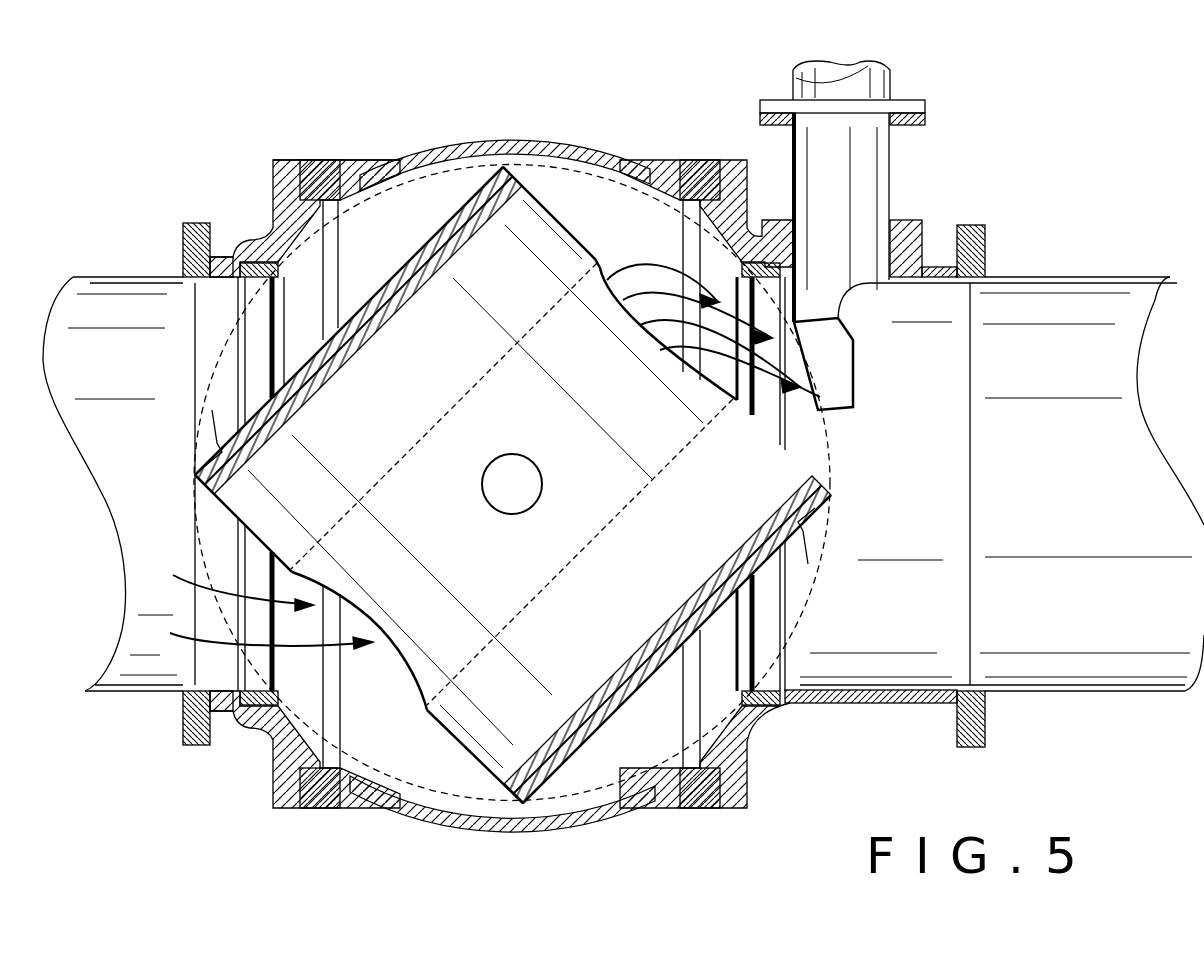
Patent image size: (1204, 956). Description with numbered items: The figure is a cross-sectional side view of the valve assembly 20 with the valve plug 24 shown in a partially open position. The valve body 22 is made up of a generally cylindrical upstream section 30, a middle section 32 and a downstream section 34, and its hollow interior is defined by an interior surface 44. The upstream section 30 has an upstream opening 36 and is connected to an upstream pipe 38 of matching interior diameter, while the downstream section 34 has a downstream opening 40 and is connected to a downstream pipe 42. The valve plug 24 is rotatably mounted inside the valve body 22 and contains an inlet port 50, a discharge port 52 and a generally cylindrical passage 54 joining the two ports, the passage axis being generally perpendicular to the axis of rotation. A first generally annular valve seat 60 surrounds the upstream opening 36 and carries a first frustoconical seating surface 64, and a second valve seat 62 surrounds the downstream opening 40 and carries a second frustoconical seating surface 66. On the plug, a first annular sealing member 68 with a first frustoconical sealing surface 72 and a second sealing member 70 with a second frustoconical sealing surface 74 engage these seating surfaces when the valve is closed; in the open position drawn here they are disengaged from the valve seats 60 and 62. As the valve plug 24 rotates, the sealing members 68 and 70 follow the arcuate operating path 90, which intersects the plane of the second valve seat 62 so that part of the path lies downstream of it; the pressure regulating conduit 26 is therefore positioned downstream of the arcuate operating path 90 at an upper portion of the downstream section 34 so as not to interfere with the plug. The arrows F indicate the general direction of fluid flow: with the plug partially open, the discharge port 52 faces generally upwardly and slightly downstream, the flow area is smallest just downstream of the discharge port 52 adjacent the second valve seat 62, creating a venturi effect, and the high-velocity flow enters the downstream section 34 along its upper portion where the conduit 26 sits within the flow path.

The valve assembly 20 is at (611, 101).
The valve body 22 is at (472, 143).
The valve plug 24 is at (549, 213).
The pressure regulating conduit 26 is at (895, 178).
The upstream section 30 is at (273, 180).
The middle section 32 is at (357, 160).
The downstream section 34 is at (735, 163).
The upstream opening 36 is at (197, 280).
The upstream pipe 38 is at (119, 277).
The downstream opening 40 is at (962, 285).
The downstream pipe 42 is at (1087, 277).
The interior surface 44 is at (398, 800).
The inlet port 50 is at (413, 672).
The discharge port 52 is at (619, 296).
The cylindrical passage 54 is at (460, 670).
The first valve seat 60 is at (242, 263).
The second valve seat 62 is at (772, 258).
The first seating surface 64 is at (316, 288).
The second seating surface 66 is at (697, 255).
The first sealing member 68 is at (263, 417).
The second sealing member 70 is at (607, 707).
The first sealing surface 72 is at (505, 168).
The second sealing surface 74 is at (540, 790).
The arcuate operating path 90 is at (815, 577).
The fluid flow direction arrows F is at (200, 607).